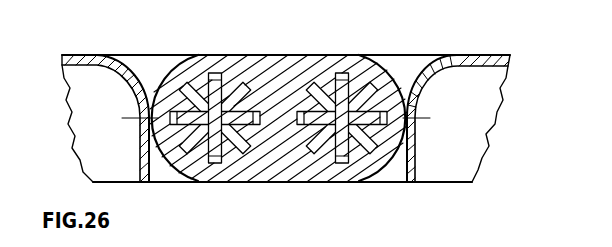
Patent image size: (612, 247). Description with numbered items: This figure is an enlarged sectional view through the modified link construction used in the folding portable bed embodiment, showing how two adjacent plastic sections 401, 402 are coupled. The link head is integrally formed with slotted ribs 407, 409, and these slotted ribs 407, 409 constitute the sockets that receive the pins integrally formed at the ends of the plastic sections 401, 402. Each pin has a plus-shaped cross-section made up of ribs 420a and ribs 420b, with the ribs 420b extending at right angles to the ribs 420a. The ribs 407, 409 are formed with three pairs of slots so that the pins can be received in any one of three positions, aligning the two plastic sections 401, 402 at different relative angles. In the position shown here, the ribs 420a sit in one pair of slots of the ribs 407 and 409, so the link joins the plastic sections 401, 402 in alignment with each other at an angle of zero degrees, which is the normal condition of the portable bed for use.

The plastic section 401 is at (87, 54).
The plastic section 402 is at (473, 54).
The rib 407 is at (266, 121).
The rib 409 is at (355, 85).
The ribs 420a is at (172, 110).
The ribs 420b is at (227, 75).